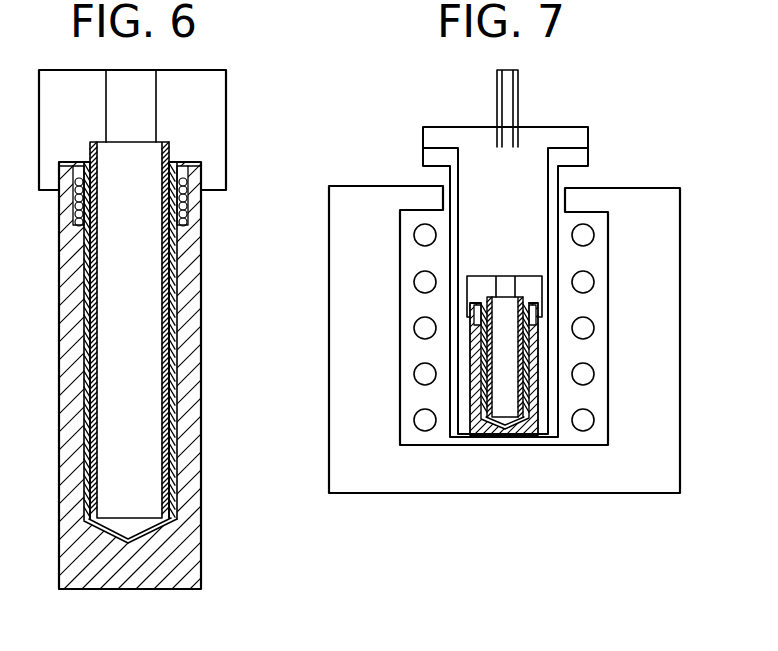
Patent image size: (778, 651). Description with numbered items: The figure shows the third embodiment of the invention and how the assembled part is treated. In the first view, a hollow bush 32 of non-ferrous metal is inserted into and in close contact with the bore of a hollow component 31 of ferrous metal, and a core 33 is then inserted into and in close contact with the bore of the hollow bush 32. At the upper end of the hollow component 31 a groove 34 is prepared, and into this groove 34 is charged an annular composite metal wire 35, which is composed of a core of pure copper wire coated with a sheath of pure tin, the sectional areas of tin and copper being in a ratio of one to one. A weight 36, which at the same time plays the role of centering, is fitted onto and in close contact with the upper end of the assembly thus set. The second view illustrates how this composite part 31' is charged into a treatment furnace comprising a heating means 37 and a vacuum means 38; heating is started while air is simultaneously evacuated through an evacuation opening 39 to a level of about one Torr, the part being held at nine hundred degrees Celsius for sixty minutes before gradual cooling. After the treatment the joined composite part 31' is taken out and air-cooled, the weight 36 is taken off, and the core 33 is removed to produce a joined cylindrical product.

In FIG. 6, the hollow component 31 is at (308, 375).
In FIG. 6, the hollow bush 32 is at (170, 328).
In FIG. 6, the core 33 is at (168, 277).
In FIG. 6, the groove 34 is at (183, 175).
In FIG. 6, the annular composite metal wire 35 is at (193, 207).
In FIG. 6, the weight 36 is at (212, 99).
In FIG. 7, the composite part 31' is at (504, 386).
In FIG. 7, the heating means 37 is at (660, 207).
In FIG. 7, the vacuum means 38 is at (575, 156).
In FIG. 7, the evacuation opening 39 is at (507, 102).